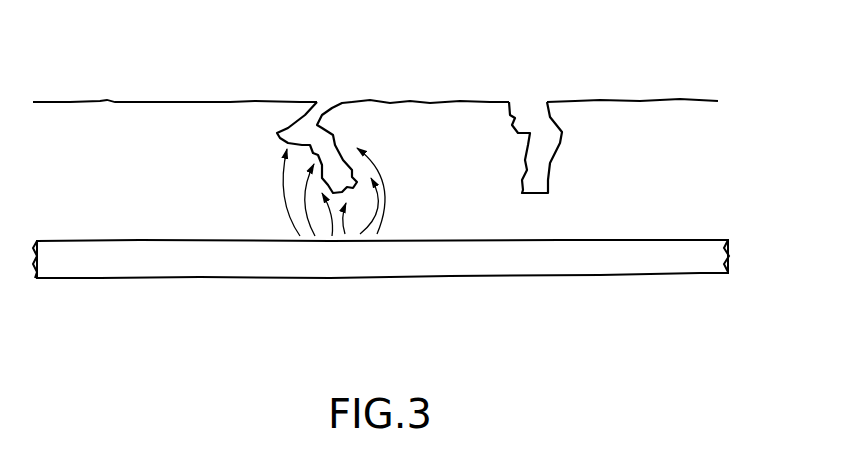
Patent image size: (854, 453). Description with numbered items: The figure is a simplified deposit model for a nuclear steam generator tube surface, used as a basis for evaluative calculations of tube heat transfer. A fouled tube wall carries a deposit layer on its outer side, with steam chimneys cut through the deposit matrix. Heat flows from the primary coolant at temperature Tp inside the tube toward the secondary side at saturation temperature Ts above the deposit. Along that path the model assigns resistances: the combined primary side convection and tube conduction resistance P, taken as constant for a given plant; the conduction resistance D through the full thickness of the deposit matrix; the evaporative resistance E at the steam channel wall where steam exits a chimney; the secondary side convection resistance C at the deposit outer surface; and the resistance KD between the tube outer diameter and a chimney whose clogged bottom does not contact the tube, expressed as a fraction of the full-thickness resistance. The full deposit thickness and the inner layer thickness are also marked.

The secondary side convection heat transfer resistance C is at (156, 66).
The deposit matrix conduction heat transfer resistance D is at (175, 111).
The evaporative heat transfer resistance E is at (262, 145).
The tube-to-chimney heat transfer resistance KD is at (351, 192).
The primary side convection and tube conduction heat transfer resistance P is at (128, 303).
The secondary side saturation temperature Ts is at (523, 47).
The primary coolant temperature Tp is at (352, 330).